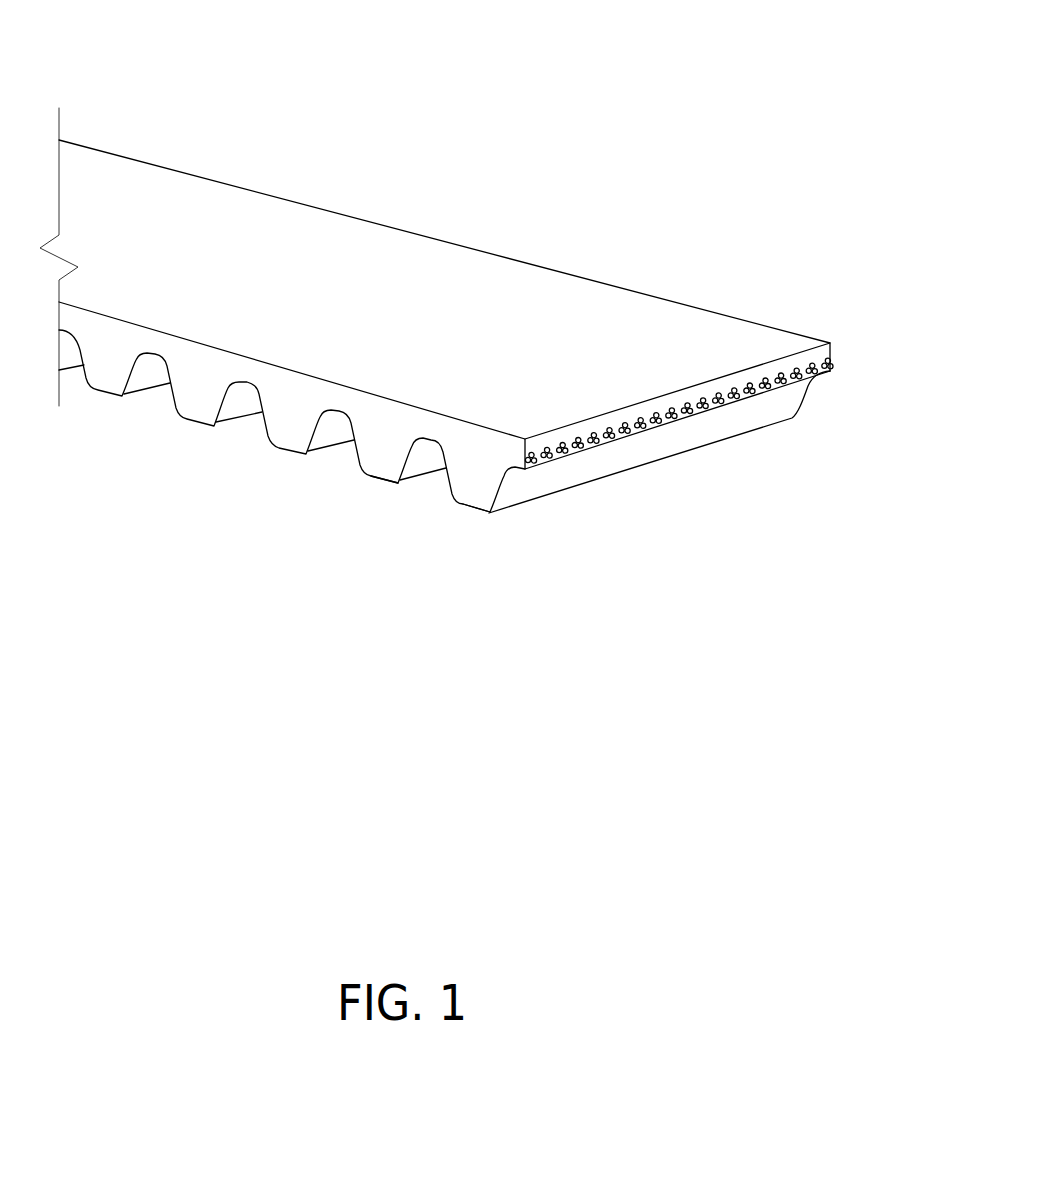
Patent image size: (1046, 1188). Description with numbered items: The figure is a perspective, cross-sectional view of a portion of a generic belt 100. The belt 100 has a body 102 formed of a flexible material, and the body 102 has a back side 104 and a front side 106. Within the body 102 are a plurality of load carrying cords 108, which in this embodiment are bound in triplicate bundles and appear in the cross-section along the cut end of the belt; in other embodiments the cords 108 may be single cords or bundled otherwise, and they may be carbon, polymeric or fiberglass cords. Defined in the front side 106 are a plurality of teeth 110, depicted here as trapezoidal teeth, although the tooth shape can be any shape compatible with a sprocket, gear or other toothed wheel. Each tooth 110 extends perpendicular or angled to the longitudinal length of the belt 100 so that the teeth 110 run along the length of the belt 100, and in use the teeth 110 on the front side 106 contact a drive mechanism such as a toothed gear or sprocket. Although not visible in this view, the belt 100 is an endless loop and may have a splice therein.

The belt 100 is at (461, 323).
The body 102 is at (305, 195).
The back side 104 is at (662, 298).
The front side 106 is at (182, 416).
The load carrying cords 108 is at (773, 390).
The teeth 110 is at (361, 473).